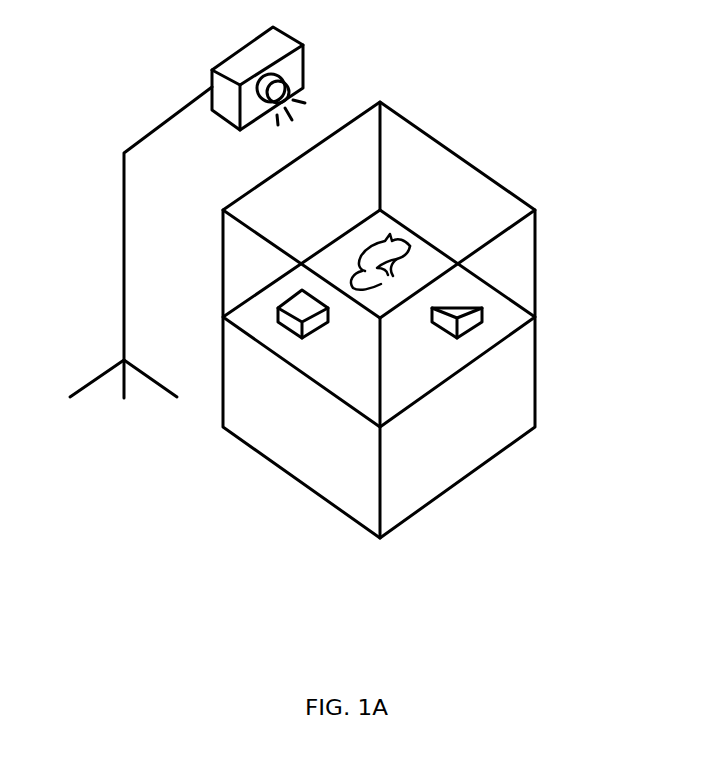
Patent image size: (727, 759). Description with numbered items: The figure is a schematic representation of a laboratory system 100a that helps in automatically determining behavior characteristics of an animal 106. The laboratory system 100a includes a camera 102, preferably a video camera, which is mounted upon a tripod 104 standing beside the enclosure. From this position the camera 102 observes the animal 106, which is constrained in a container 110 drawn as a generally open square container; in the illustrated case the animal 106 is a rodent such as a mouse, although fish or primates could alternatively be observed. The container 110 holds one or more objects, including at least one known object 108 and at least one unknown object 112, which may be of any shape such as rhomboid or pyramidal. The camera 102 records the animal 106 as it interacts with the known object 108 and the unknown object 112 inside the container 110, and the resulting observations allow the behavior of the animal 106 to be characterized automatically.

The laboratory system 100a is at (360, 329).
The camera 102 is at (212, 70).
The tripod 104 is at (124, 277).
The animal 106 is at (348, 260).
The known object 108 is at (278, 314).
The container 110 is at (535, 265).
The unknown object 112 is at (482, 313).